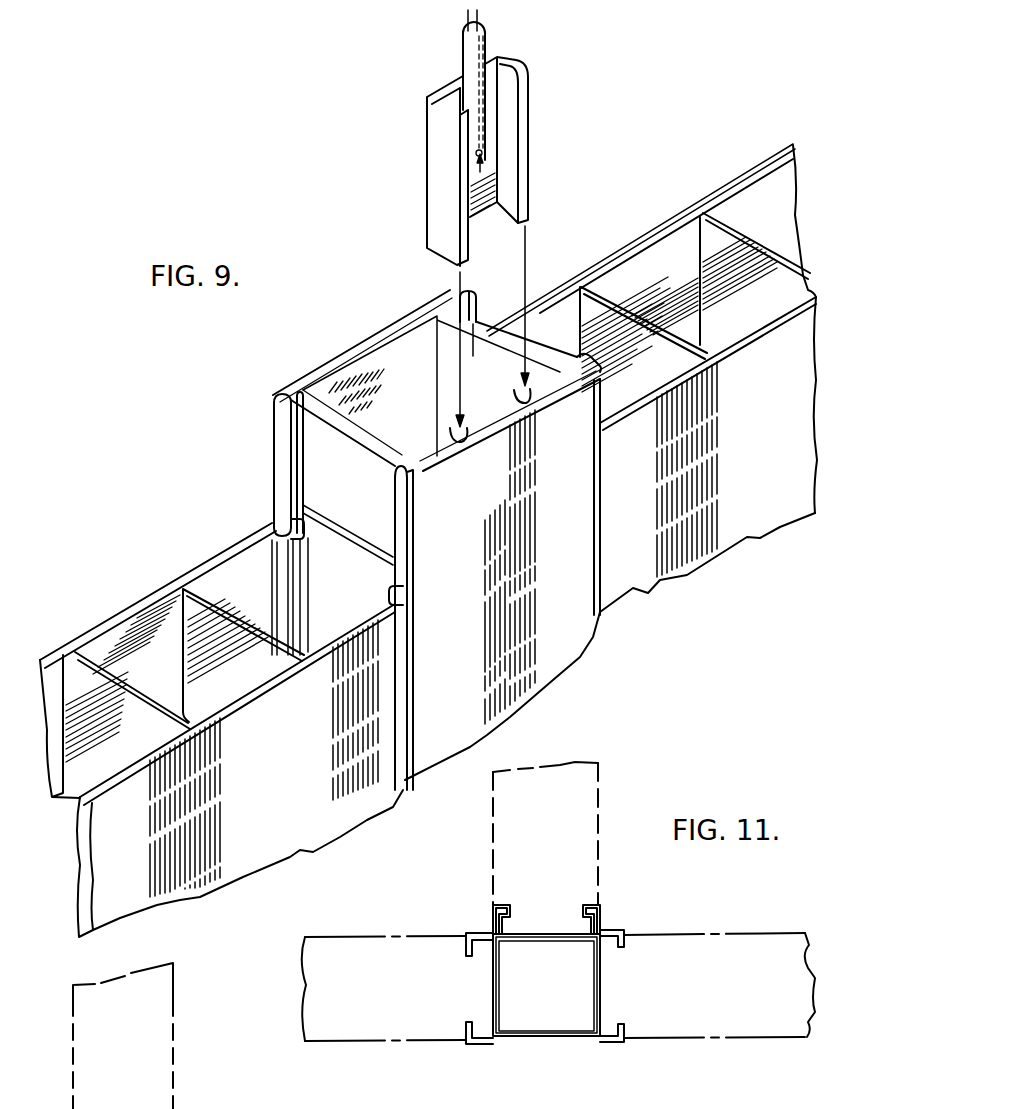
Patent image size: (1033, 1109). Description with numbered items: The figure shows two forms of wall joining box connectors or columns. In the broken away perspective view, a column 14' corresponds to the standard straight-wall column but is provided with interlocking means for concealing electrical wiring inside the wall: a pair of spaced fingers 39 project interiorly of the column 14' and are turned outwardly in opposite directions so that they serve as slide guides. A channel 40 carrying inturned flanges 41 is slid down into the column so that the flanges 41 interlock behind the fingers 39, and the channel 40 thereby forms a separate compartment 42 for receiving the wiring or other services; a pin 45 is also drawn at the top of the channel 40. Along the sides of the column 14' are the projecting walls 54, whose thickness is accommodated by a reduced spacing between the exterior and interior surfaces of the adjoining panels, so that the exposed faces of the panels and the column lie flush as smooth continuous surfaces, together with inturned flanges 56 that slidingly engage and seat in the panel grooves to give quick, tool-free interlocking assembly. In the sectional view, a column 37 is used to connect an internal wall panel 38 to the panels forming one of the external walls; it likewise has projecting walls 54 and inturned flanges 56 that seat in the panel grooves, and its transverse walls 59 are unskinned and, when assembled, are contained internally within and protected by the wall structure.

In FIG. 9, the column 14' is at (477, 535).
In FIG. 11, the column 37 is at (538, 1050).
In FIG. 11, the internal wall panel 38 is at (600, 792).
In FIG. 9, the spaced fingers 39 is at (450, 432).
In FIG. 9, the channel 40 is at (495, 138).
In FIG. 9, the inturned flanges 41 is at (532, 147).
In FIG. 9, the compartment 42 is at (509, 179).
In FIG. 9, the pin 45 is at (487, 35).
In FIG. 9, the projecting walls 54 is at (284, 394).
In FIG. 11, the projecting walls 54 is at (612, 908).
In FIG. 9, the inturned flanges 56 is at (473, 292).
In FIG. 11, the inturned flanges 56 is at (580, 912).
In FIG. 11, the transverse walls 59 is at (593, 975).